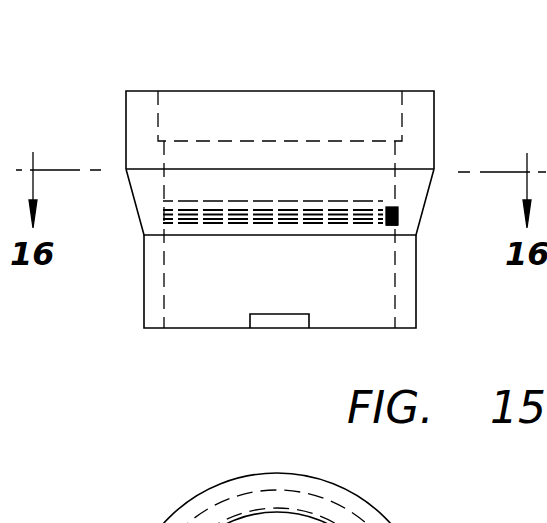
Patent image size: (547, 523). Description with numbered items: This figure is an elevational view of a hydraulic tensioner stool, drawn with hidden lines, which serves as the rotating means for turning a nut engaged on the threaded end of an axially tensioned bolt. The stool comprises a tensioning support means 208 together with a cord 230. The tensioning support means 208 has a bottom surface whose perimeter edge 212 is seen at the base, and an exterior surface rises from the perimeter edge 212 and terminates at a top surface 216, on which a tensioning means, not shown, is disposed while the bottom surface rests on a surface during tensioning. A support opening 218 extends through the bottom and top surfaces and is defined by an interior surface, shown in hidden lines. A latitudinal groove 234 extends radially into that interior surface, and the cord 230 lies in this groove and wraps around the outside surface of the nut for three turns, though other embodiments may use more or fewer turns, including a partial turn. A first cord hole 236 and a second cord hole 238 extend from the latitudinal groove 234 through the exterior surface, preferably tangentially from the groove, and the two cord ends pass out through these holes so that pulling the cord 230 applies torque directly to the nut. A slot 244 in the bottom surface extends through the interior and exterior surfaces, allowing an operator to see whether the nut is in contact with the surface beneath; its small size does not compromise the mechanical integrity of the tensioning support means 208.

The tensioning support means 208 is at (510, 53).
The perimeter edge 212 is at (416, 327).
The top surface 216 is at (417, 91).
The support opening 218 is at (250, 91).
The cord 230 is at (380, 202).
The latitudinal groove 234 is at (398, 212).
The first cord hole 236 is at (398, 224).
The second cord hole 238 is at (163, 207).
The slot 244 is at (302, 329).